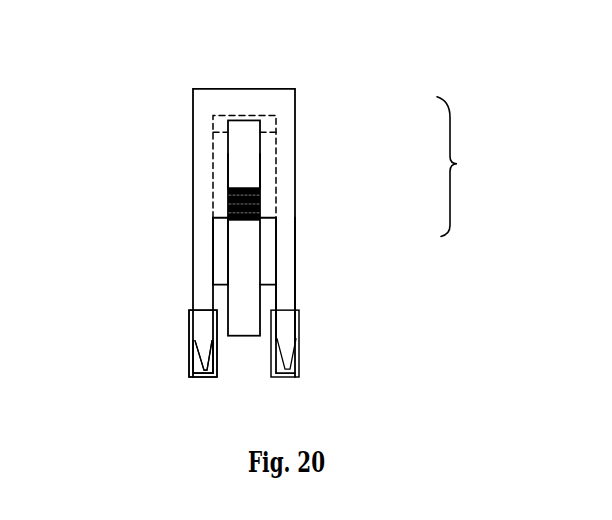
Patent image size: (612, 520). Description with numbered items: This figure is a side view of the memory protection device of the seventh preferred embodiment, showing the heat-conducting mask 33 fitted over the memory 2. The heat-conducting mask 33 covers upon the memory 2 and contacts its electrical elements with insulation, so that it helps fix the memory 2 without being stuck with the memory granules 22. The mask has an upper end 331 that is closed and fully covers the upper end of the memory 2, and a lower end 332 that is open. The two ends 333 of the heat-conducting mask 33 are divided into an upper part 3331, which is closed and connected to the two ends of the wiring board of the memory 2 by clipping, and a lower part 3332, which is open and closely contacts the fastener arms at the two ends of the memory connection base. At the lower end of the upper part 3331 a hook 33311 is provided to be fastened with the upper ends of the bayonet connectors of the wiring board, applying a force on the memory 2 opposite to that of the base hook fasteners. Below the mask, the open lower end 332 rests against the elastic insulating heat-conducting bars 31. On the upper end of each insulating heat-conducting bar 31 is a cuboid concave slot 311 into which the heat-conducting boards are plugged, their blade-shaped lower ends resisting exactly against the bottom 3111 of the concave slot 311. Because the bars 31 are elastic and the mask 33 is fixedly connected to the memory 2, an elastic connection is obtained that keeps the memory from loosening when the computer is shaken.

The memory 2 is at (233, 178).
The memory granules 22 is at (218, 243).
The insulating heat-conducting bar 31 is at (193, 323).
The concave slot 311 is at (197, 360).
The bottom of the concave slot 3111 is at (197, 368).
The heat-conducting mask 33 is at (283, 213).
The upper end of the heat-conducting mask 331 is at (271, 97).
The lower end of the heat-conducting mask 332 is at (287, 327).
The two ends of the heat-conducting mask 333 is at (472, 167).
The upper part of the two ends of the heat-conducting mask 3331 is at (253, 143).
The hook 33311 is at (258, 192).
The lower part of the two ends of the heat-conducting mask 3332 is at (268, 303).